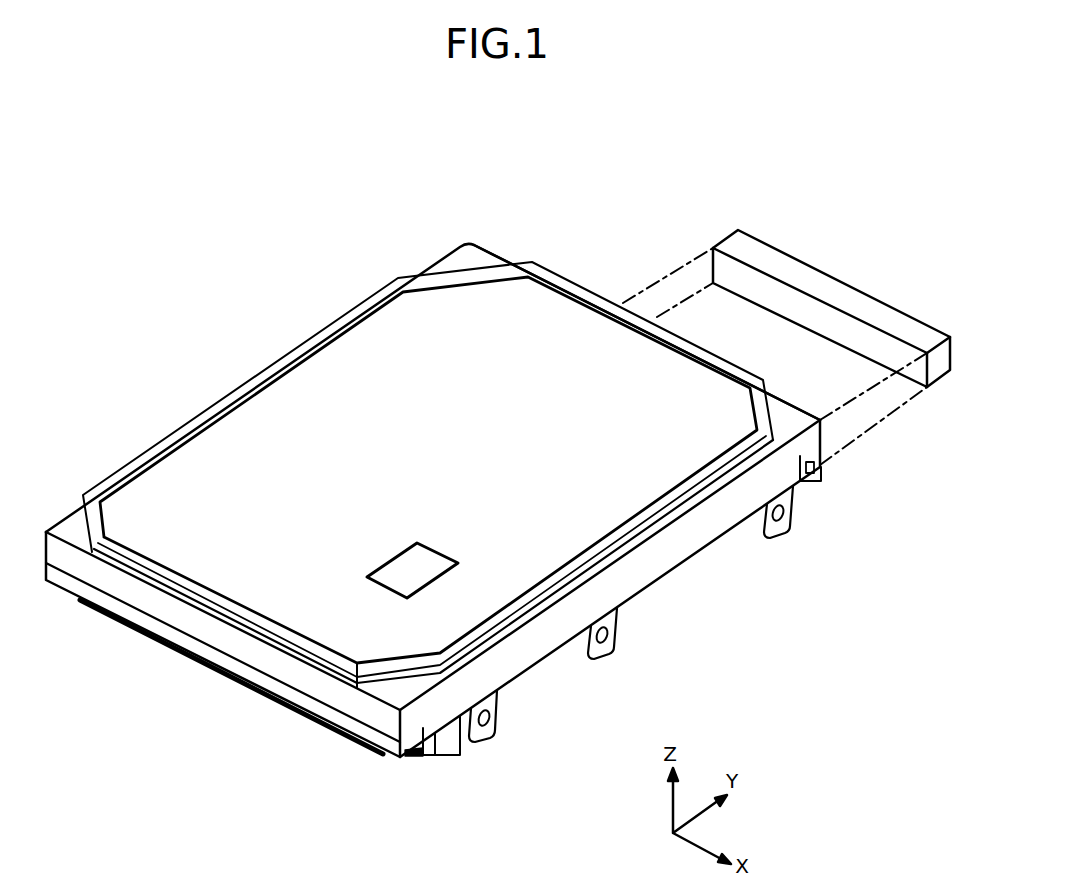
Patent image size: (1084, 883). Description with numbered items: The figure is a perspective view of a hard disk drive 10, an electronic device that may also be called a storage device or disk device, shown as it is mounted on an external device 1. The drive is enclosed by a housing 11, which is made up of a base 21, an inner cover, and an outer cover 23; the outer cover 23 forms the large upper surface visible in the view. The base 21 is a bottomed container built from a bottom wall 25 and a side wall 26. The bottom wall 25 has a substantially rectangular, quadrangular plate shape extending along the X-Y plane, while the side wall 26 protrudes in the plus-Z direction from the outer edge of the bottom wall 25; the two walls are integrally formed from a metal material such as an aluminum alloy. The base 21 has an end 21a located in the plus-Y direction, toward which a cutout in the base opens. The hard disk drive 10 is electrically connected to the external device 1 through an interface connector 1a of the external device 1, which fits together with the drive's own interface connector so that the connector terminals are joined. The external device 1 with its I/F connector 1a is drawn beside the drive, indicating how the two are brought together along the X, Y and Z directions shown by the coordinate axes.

The external device 1 is at (680, 170).
The I/F connector 1a is at (835, 293).
The hard disk drive 10 is at (436, 252).
The housing 11 is at (165, 483).
The base 21 is at (670, 600).
The end 21a is at (504, 260).
The outer cover 23 is at (617, 344).
The bottom wall 25 is at (465, 751).
The side wall 26 is at (512, 703).